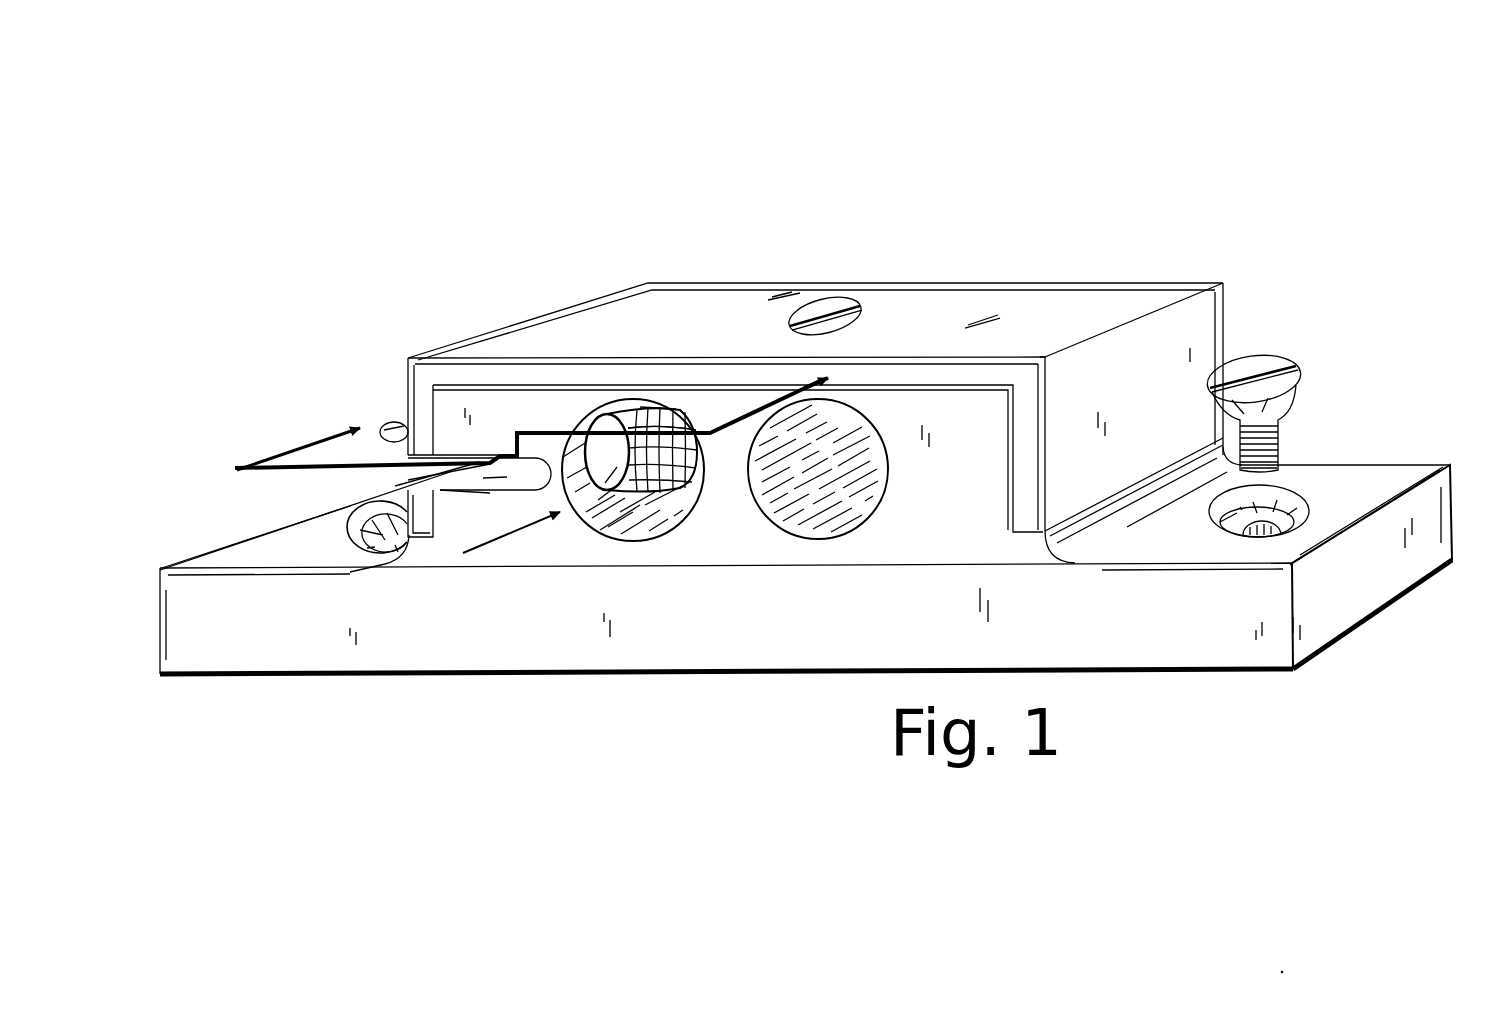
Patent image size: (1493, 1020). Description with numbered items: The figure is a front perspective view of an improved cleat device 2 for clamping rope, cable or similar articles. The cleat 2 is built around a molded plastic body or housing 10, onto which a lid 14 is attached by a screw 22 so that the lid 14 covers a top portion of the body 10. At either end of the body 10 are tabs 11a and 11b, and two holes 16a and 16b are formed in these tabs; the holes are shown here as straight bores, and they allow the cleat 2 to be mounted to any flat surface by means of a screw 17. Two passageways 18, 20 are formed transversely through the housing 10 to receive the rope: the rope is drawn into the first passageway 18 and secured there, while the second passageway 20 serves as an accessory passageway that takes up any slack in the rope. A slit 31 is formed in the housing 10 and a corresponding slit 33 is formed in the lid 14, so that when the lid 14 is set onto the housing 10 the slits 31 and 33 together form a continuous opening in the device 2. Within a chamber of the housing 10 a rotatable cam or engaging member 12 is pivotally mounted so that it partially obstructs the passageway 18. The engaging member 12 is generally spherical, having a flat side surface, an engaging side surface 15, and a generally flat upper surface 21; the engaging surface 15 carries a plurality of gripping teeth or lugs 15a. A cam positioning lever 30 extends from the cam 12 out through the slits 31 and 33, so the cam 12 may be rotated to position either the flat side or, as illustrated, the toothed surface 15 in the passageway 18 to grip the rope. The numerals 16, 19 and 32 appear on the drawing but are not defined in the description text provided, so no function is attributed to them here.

The cleat device 2 is at (1025, 157).
The body or housing 10 is at (345, 683).
The tab 11a is at (1395, 468).
The tab 11b is at (237, 555).
The rotatable cam or engaging member 12 is at (633, 405).
The lid 14 is at (737, 310).
The engaging side surface 15 is at (670, 413).
The gripping teeth or lugs 15a is at (716, 420).
The bore 16 is at (600, 502).
The hole 16a is at (1228, 535).
The hole 16b is at (350, 540).
The screw 17 is at (1265, 372).
The first passageway 18 is at (625, 540).
The insertion direction arrow 19 is at (490, 548).
The second passageway 20 is at (822, 540).
The upper surface 21 is at (607, 412).
The screw 22 is at (830, 308).
The cam positioning lever 30 is at (393, 428).
The slit 31 is at (490, 493).
The slide rod 32 is at (395, 487).
The slit 33 is at (433, 537).